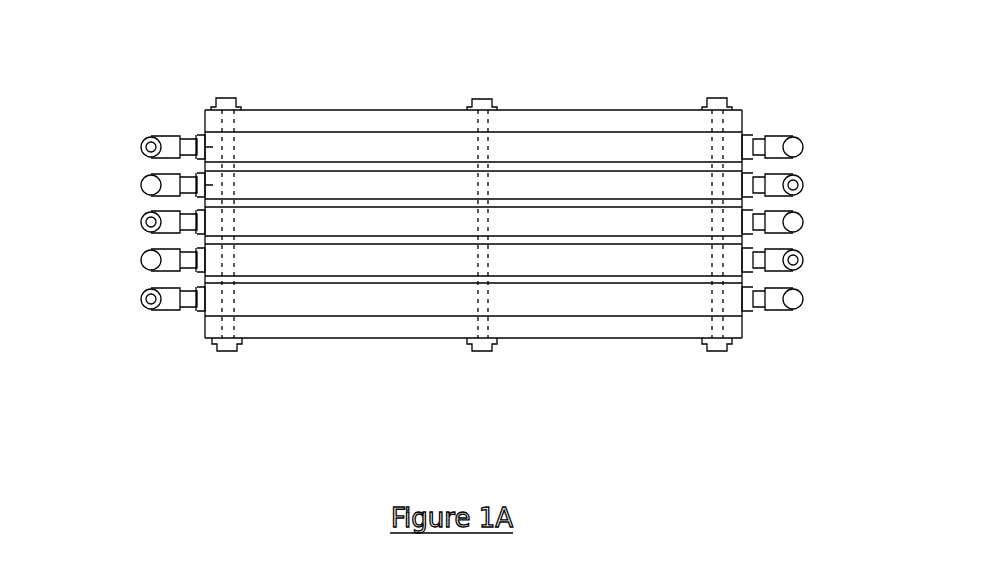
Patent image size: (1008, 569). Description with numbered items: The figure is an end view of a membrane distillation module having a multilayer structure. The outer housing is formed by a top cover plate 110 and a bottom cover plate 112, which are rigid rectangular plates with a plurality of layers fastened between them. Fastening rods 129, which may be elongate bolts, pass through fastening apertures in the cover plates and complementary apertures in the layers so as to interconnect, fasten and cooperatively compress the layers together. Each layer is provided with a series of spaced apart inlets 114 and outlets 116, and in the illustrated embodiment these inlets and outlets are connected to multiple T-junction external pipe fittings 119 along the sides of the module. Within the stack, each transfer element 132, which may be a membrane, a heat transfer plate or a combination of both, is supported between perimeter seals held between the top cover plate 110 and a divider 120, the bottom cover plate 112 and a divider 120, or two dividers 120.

The top cover plate 110 is at (349, 112).
The bottom cover plate 112 is at (395, 335).
The inlet 114 is at (121, 186).
The outlet 116 is at (121, 261).
The T-junction external pipe fitting 119 is at (140, 141).
The divider 120 is at (199, 392).
The fastening rod 129 is at (226, 98).
The transfer element 132 is at (747, 376).